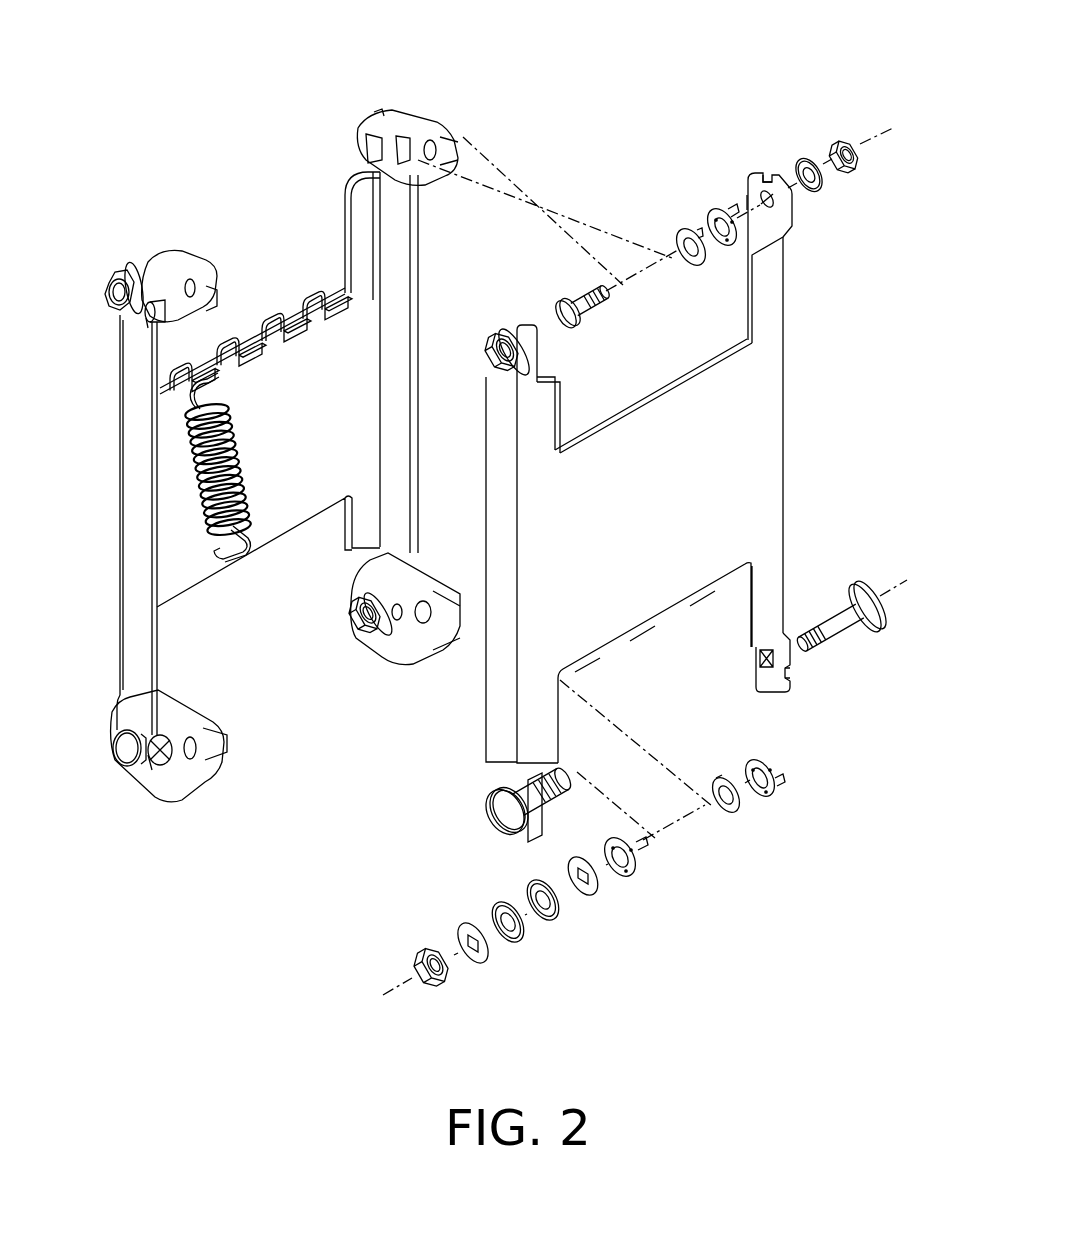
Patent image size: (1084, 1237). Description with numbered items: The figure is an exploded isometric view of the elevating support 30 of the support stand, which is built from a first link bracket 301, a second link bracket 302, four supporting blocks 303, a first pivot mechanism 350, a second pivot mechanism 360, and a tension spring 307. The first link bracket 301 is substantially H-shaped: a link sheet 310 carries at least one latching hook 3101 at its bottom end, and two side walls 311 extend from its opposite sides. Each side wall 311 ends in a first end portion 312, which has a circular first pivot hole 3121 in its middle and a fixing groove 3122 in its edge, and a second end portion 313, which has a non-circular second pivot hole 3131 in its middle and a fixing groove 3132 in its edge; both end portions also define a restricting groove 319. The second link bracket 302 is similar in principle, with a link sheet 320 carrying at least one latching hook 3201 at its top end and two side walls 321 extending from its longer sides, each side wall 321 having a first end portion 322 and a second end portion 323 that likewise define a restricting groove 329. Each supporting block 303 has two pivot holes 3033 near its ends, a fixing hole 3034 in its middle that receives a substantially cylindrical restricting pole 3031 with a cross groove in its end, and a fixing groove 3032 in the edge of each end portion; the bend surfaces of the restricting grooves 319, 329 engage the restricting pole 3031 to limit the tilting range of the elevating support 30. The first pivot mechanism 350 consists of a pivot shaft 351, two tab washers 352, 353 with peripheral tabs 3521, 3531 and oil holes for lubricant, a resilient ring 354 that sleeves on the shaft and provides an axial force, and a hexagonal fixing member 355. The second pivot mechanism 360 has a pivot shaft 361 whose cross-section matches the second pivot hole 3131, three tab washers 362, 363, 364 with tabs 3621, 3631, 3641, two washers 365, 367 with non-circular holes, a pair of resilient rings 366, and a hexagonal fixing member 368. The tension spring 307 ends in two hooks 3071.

The elevating support 30 is at (467, 31).
The first link bracket 301 is at (807, 390).
The second link bracket 302 is at (113, 473).
The supporting block 303 is at (193, 277).
The restricting pole 3031 is at (163, 280).
The fixing groove 3032 is at (462, 140).
The pivot hole 3033 is at (425, 147).
The fixing hole 3034 is at (397, 138).
The tension spring 307 is at (240, 445).
The hook 3071 is at (218, 563).
The link sheet 310 is at (758, 500).
The latching hook 3101 is at (633, 633).
The side wall 311 is at (503, 510).
The first end portion 312 is at (517, 368).
The first pivot hole 3121 is at (773, 202).
The fixing groove 3122 is at (768, 180).
The second end portion 313 is at (507, 780).
The second pivot hole 3131 is at (753, 667).
The fixing groove 3132 is at (790, 672).
The restricting groove 319 is at (750, 203).
The link sheet 320 is at (298, 507).
The latching hook 3201 is at (253, 363).
The side wall 321 is at (132, 510).
The first end portion 322 is at (120, 267).
The second end portion 323 is at (112, 730).
The restricting groove 329 is at (160, 300).
The first pivot mechanism 350 is at (853, 122).
The pivot shaft 351 is at (583, 300).
The tab washer 352 is at (682, 245).
The tab 3521 is at (700, 237).
The tab washer 353 is at (717, 205).
The tab 3531 is at (727, 207).
The resilient ring 354 is at (823, 187).
The fixing member 355 is at (857, 168).
The second pivot mechanism 360 is at (410, 987).
The pivot shaft 361 is at (843, 627).
The tab washer 362 is at (763, 797).
The tab 3621 is at (785, 785).
The tab washer 363 is at (733, 813).
The tab 3631 is at (720, 777).
The tab washer 364 is at (612, 877).
The tab 3641 is at (633, 848).
The washer 365 is at (592, 893).
The resilient ring 366 is at (510, 938).
The washer 367 is at (487, 960).
The fixing member 368 is at (443, 987).